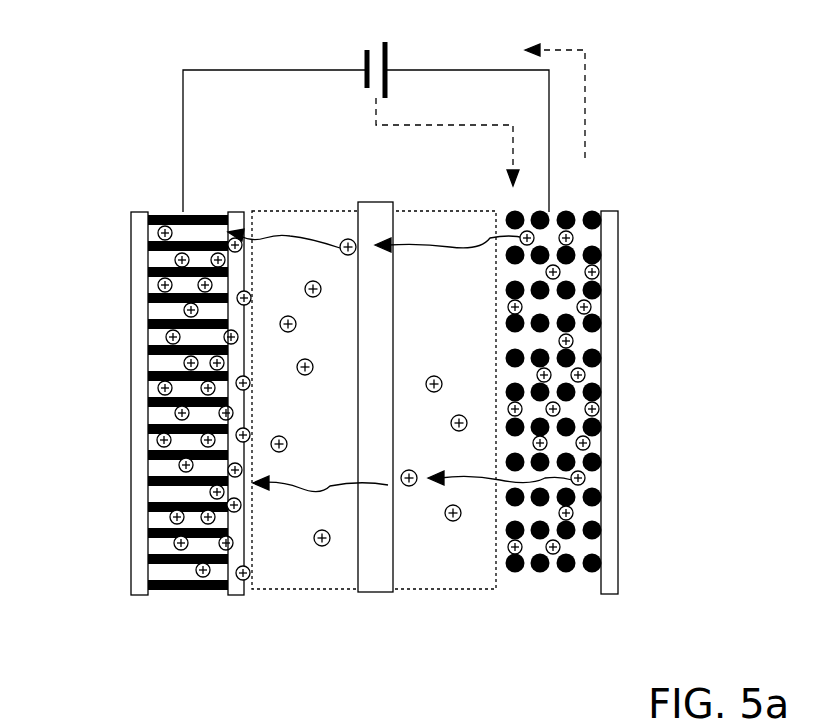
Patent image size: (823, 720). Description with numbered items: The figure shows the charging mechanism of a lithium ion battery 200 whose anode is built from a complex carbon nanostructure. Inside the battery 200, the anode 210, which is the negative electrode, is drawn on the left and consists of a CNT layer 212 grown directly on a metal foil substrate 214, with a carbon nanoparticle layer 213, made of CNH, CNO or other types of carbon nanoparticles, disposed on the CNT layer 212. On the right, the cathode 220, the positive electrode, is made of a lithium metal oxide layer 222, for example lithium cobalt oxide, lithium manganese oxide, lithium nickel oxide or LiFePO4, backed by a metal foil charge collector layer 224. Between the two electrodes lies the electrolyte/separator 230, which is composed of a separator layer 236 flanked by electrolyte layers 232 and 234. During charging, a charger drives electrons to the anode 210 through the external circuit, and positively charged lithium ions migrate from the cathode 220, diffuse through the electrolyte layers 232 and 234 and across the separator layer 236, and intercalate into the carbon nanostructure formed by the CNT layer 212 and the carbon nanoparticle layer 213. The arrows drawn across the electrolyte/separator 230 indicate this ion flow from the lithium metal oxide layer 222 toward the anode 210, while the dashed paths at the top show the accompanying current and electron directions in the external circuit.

The lithium ion battery 200 is at (143, 172).
The anode 210 is at (173, 410).
The CNT layer 212 is at (195, 210).
The carbon nanoparticle layer 213 is at (239, 215).
The metal foil substrate 214 is at (138, 385).
The cathode 220 is at (606, 414).
The lithium metal oxide layer 222 is at (567, 210).
The metal foil charge collector layer 224 is at (610, 392).
The electrolyte/separator 230 is at (400, 433).
The electrolyte layer 232 is at (308, 387).
The electrolyte layer 234 is at (473, 392).
The separator layer 236 is at (383, 314).